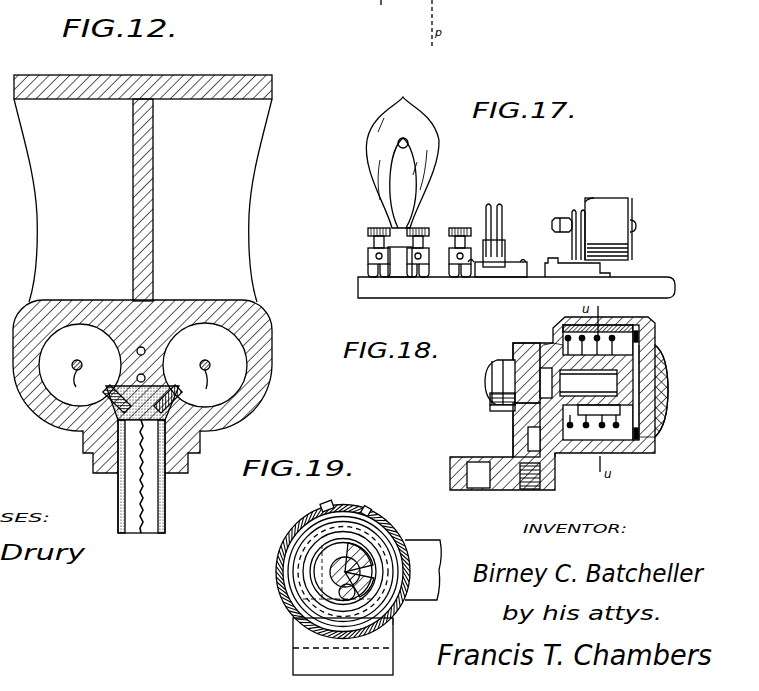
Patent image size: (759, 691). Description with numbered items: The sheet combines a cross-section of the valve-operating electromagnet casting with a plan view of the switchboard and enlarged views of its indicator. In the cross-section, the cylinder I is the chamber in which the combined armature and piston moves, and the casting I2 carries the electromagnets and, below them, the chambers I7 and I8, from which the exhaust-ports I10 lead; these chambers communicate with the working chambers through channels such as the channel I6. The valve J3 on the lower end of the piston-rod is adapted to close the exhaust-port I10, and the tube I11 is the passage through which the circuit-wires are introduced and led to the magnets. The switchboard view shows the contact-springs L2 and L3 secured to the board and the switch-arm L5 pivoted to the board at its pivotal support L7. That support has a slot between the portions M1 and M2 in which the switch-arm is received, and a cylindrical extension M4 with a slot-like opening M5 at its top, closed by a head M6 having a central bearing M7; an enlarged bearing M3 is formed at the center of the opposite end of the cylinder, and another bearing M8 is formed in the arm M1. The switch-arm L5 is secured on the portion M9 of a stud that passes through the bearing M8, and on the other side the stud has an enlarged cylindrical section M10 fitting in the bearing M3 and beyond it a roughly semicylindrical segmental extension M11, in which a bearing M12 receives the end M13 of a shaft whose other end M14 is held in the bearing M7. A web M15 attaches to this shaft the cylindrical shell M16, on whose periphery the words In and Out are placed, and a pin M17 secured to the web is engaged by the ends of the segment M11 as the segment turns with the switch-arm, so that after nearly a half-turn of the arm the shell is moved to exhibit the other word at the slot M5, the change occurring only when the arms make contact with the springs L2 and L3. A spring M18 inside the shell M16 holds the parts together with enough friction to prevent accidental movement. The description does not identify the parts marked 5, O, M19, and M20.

In FIG. 12, the cylinder I is at (137, 378).
In FIG. 12, the casting I2 is at (248, 412).
In FIG. 12, the channel I6 is at (145, 351).
In FIG. 12, the chamber I7 is at (80, 365).
In FIG. 12, the chamber I8 is at (211, 367).
In FIG. 12, the exhaust-port I10 is at (142, 389).
In FIG. 12, the tube I11 is at (118, 478).
In FIG. 12, the valve J3 is at (77, 360).
In FIG. 12, the contact pieces 5 is at (139, 385).
In FIG. 17, the lamp O is at (392, 187).
In FIG. 17, the contact-spring L2 is at (496, 230).
In FIG. 17, the contact-spring L3 is at (568, 224).
In FIG. 18, the switch-arm L5 is at (548, 342).
In FIG. 19, the switch-arm L5 is at (423, 569).
In FIG. 17, the pivotal support L7 is at (568, 262).
In FIG. 18, the pivotal support L7 is at (513, 456).
In FIG. 19, the pivotal support L7 is at (343, 646).
In FIG. 18, the support portion M1 is at (513, 352).
In FIG. 18, the support portion M2 is at (513, 428).
In FIG. 18, the enlarged bearing M3 is at (540, 340).
In FIG. 17, the cylindrical extension M4 is at (610, 229).
In FIG. 18, the cylindrical extension M4 is at (631, 456).
In FIG. 19, the cylindrical extension M4 is at (407, 522).
In FIG. 17, the slot-like opening M5 is at (608, 198).
In FIG. 19, the slot-like opening M5 is at (340, 506).
In FIG. 17, the head M6 is at (632, 250).
In FIG. 18, the head M6 is at (660, 348).
In FIG. 18, the bearing M7 is at (668, 380).
In FIG. 18, the bearing M8 is at (510, 380).
In FIG. 18, the stud portion M9 is at (500, 395).
In FIG. 18, the enlarged cylindrical section M10 is at (512, 407).
In FIG. 19, the enlarged cylindrical section M10 is at (310, 590).
In FIG. 18, the segmental extension M11 is at (565, 345).
In FIG. 19, the segmental extension M11 is at (360, 580).
In FIG. 18, the bearing M12 is at (551, 486).
In FIG. 18, the shaft end M13 is at (588, 383).
In FIG. 19, the shaft end M13 is at (358, 570).
In FIG. 18, the shaft end M14 is at (668, 400).
In FIG. 18, the web M15 is at (655, 331).
In FIG. 18, the cylindrical shell M16 is at (597, 482).
In FIG. 19, the cylindrical shell M16 is at (322, 572).
In FIG. 18, the pin M17 is at (567, 454).
In FIG. 19, the pin M17 is at (392, 618).
In FIG. 18, the spring M18 is at (660, 422).
In FIG. 19, the spring M18 is at (282, 560).
In FIG. 19, the key M19 is at (332, 506).
In FIG. 19, the ring segment M20 is at (370, 514).